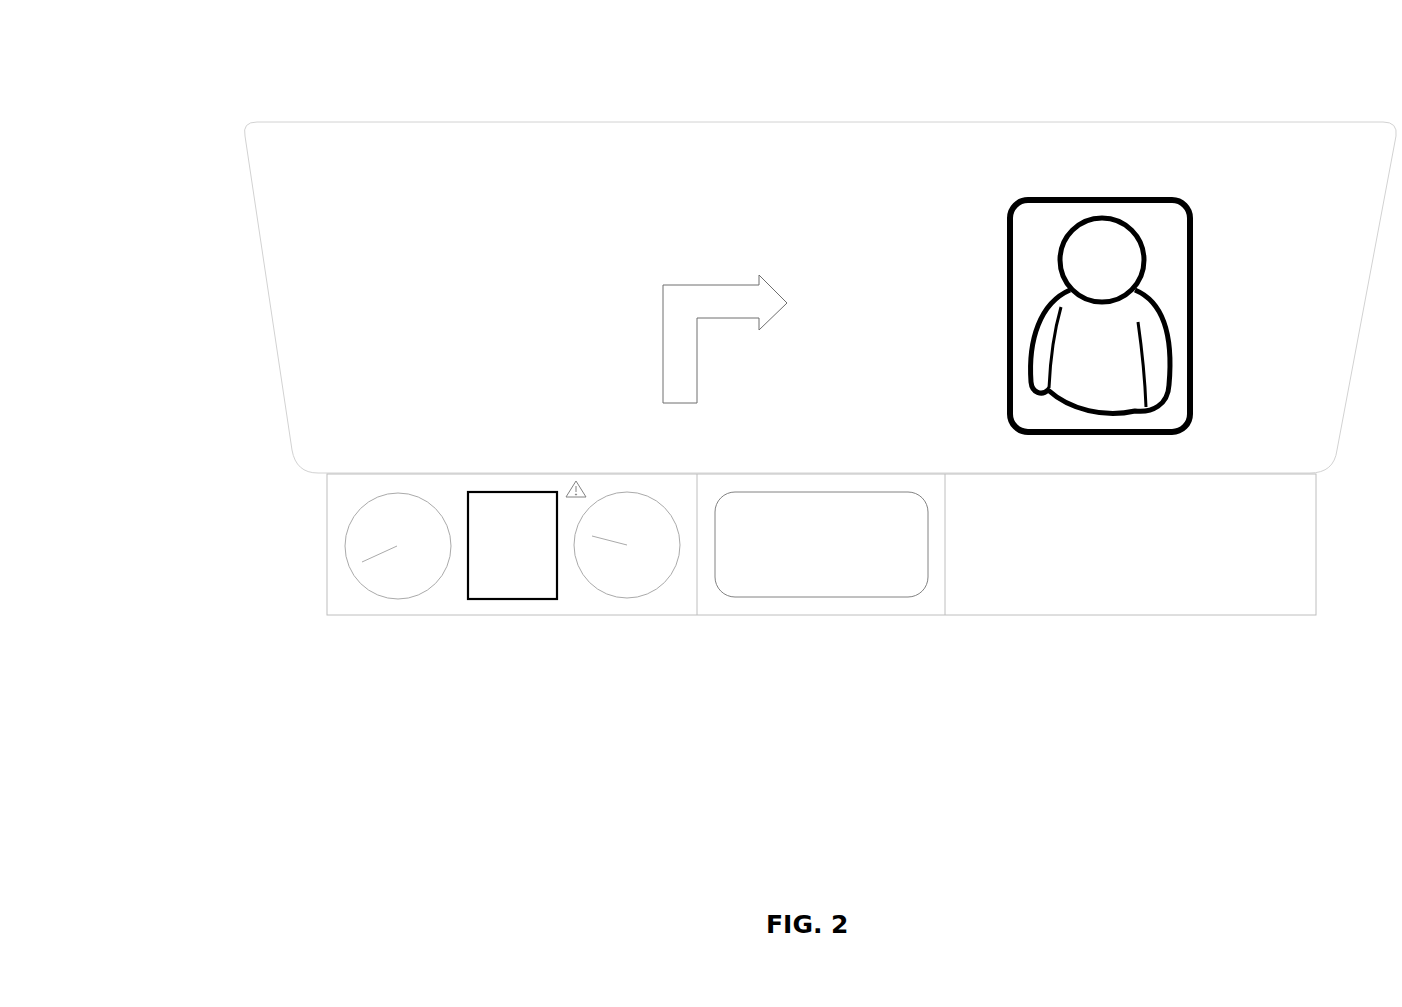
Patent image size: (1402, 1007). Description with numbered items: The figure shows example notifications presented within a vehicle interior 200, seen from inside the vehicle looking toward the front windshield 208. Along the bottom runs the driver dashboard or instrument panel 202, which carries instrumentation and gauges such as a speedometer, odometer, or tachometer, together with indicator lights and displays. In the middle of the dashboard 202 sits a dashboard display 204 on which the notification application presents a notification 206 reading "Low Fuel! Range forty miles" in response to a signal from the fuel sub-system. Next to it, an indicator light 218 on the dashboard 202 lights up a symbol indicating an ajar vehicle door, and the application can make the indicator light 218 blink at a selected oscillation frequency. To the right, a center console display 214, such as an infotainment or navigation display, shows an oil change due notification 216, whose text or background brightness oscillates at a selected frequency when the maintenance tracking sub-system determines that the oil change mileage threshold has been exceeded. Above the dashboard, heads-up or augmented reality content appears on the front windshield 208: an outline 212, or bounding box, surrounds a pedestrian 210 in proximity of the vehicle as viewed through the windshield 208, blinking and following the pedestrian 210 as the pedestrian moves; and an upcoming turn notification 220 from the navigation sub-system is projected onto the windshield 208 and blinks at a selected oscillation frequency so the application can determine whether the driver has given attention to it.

The vehicle interior 200 is at (168, 143).
The dashboard 202 is at (367, 617).
The dashboard display 204 is at (490, 492).
The notification 206 is at (517, 596).
The front windshield 208 is at (647, 121).
The pedestrian 210 is at (1099, 218).
The outline 212 is at (1141, 198).
The center console display 214 is at (825, 598).
The oil change due notification 216 is at (844, 528).
The indicator light 218 is at (576, 481).
The upcoming turn notification 220 is at (645, 293).